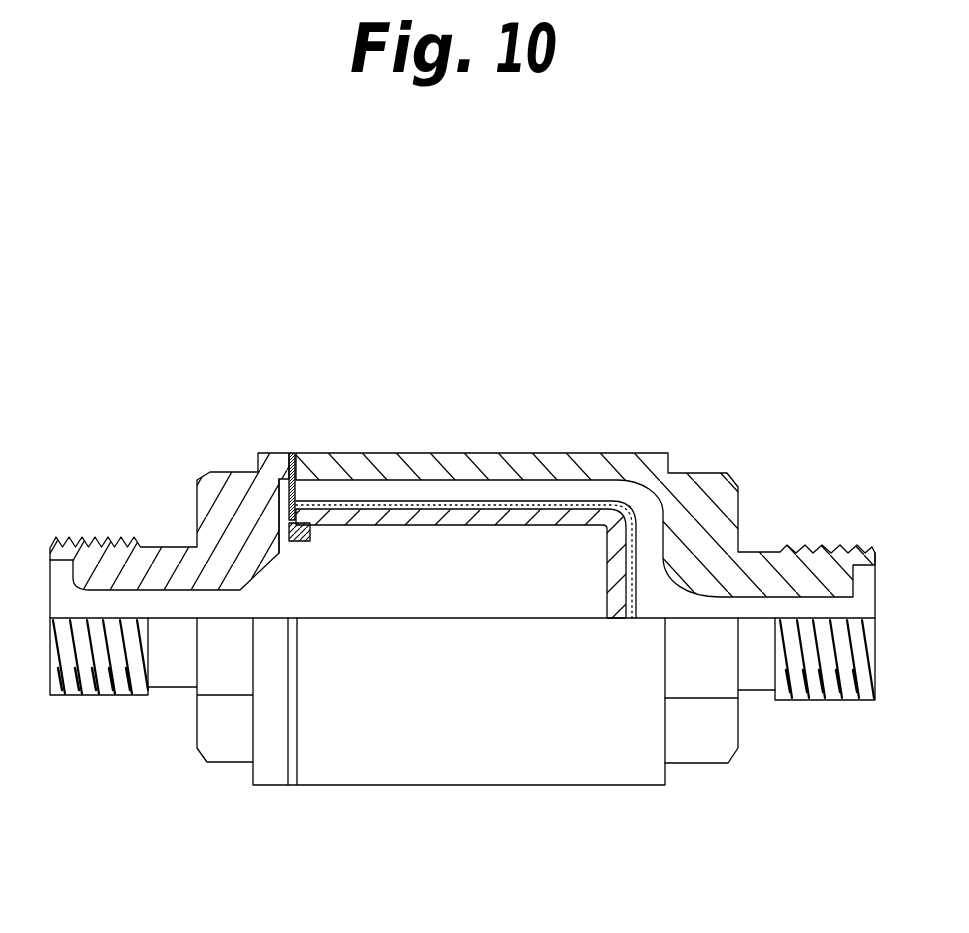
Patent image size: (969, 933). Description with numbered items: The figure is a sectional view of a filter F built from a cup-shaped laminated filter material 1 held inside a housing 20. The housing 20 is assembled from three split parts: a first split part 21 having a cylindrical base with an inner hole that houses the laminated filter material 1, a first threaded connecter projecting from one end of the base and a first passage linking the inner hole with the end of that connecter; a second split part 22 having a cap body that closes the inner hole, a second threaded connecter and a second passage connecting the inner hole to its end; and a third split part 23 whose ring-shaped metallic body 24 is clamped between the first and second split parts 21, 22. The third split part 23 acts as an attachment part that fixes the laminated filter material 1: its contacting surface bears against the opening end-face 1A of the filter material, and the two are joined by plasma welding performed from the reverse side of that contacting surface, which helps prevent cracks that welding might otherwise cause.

The laminated filter material 1 is at (500, 500).
The opening end-face 1A is at (295, 519).
The housing 20 is at (435, 368).
The first split part 21 is at (398, 453).
The second split part 22 is at (233, 470).
The third split part 23 is at (296, 481).
The ring-shaped metallic body 24 is at (279, 511).
The filter F is at (494, 425).